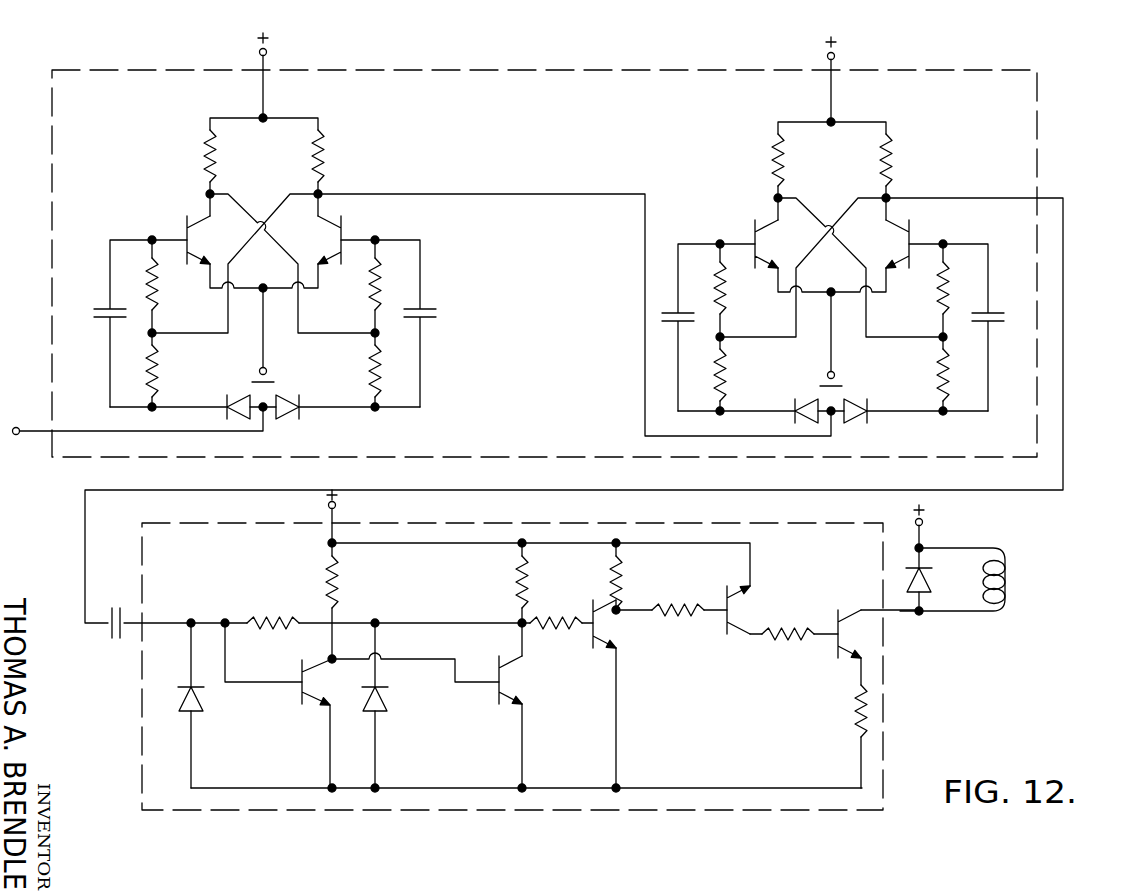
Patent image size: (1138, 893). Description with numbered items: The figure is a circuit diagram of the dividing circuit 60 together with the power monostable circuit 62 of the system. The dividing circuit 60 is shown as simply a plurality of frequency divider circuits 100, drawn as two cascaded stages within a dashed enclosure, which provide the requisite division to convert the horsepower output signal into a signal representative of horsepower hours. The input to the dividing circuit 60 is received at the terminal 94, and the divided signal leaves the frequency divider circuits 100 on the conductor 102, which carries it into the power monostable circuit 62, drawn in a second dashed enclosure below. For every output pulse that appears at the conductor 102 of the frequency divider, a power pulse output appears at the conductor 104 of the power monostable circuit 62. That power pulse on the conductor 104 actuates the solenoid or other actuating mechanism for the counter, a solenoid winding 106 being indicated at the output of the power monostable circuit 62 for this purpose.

The dividing circuit 60 is at (553, 463).
The power monostable circuit 62 is at (613, 811).
The input terminal 94 is at (35, 430).
The frequency divider circuits 100 is at (430, 256).
The conductor 102 is at (1064, 408).
The conductor 104 is at (900, 615).
The solenoid winding 106 is at (1007, 580).